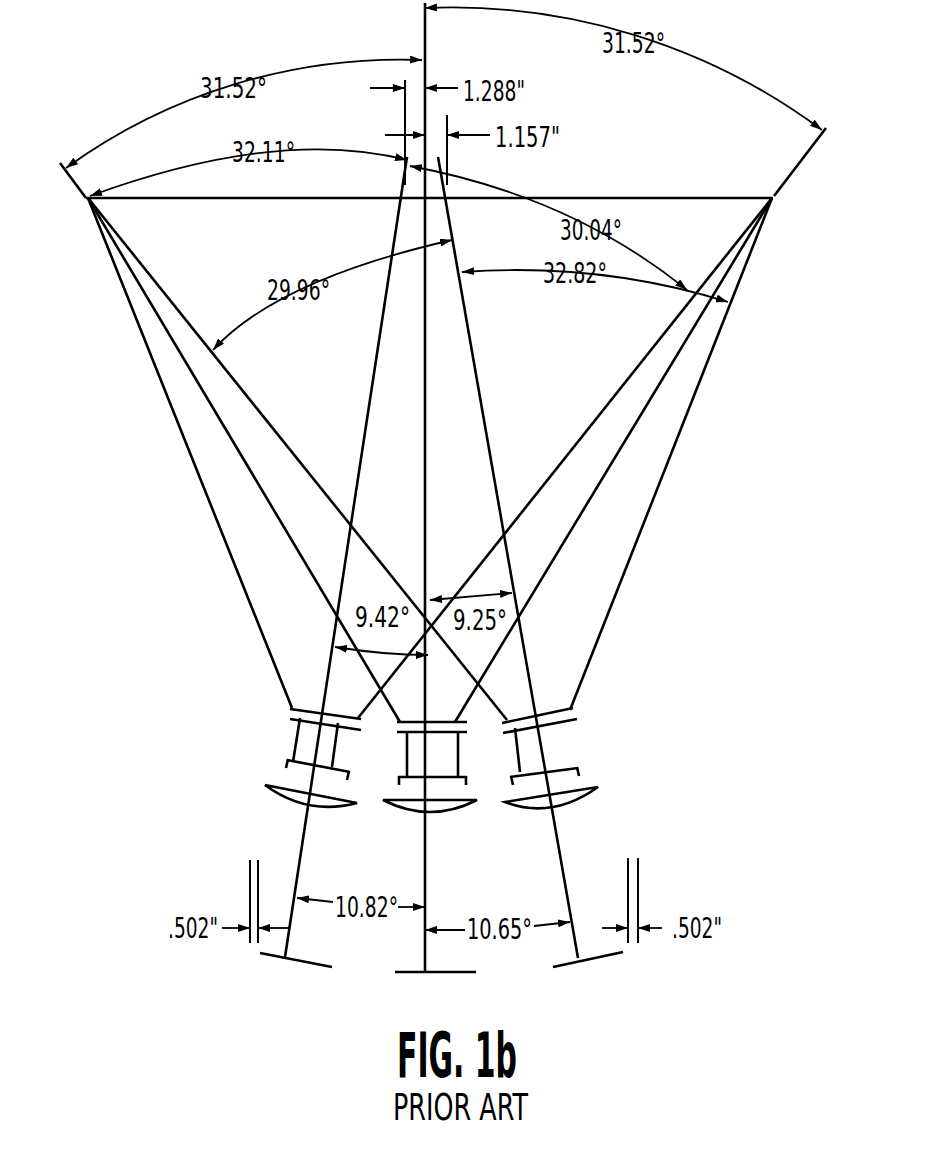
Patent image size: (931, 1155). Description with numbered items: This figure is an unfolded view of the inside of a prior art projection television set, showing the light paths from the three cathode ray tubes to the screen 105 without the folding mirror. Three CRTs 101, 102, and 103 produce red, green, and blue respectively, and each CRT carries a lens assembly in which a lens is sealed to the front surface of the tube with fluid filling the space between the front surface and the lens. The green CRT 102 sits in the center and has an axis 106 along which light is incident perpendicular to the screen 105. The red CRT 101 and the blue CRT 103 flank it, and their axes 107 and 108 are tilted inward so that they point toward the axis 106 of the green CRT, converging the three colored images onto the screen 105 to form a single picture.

The CRT 101 is at (560, 808).
The CRT 102 is at (445, 815).
The CRT 103 is at (320, 812).
The screen 105 is at (712, 196).
The axis 106 is at (425, 463).
The axis 107 is at (490, 445).
The axis 108 is at (373, 388).